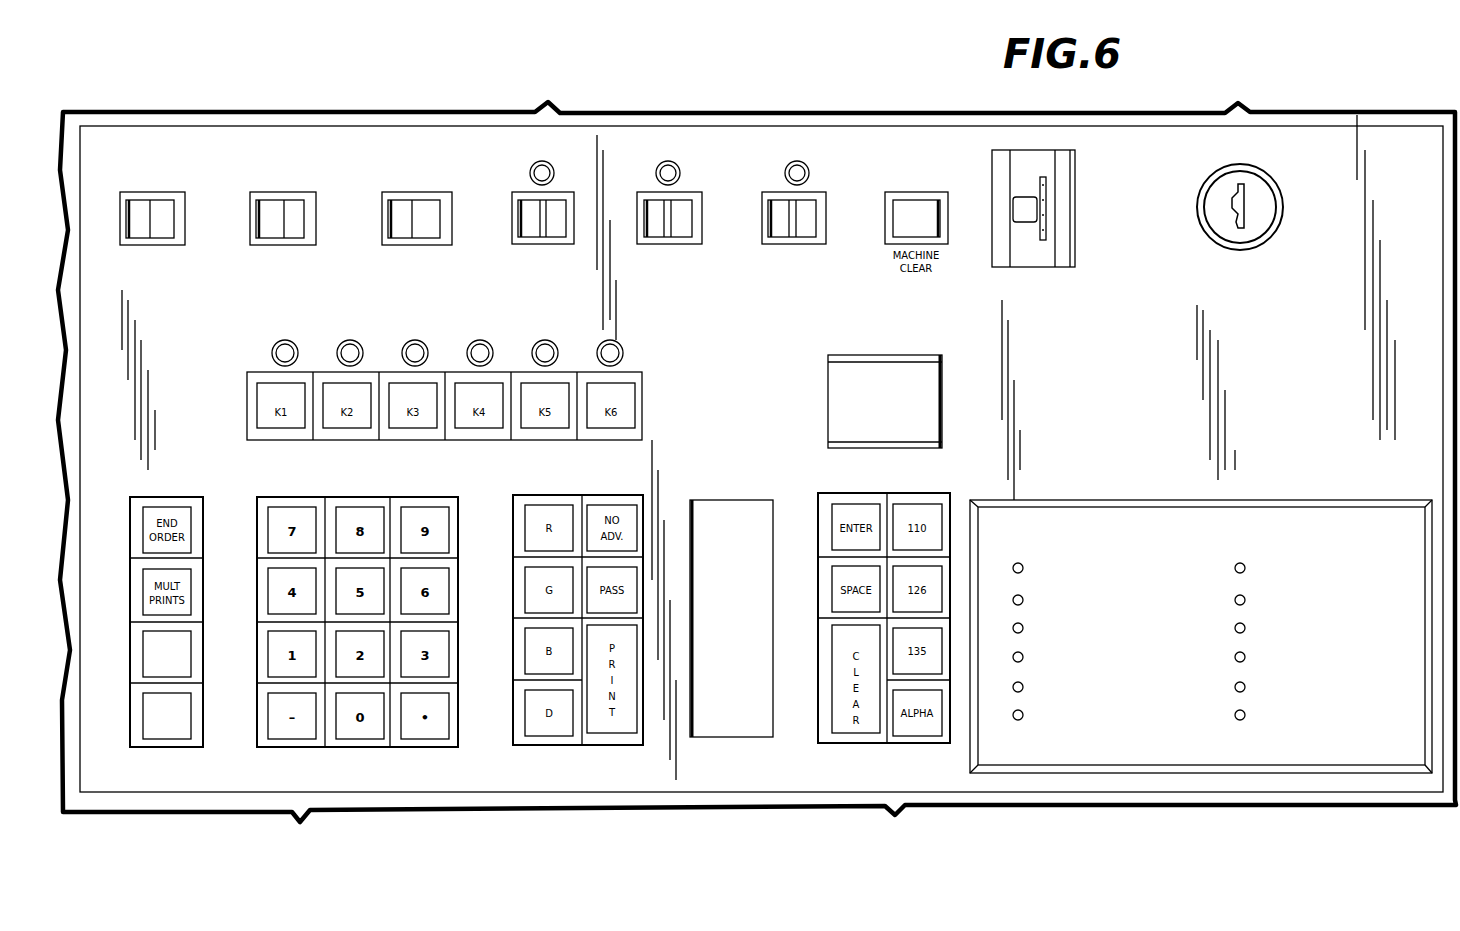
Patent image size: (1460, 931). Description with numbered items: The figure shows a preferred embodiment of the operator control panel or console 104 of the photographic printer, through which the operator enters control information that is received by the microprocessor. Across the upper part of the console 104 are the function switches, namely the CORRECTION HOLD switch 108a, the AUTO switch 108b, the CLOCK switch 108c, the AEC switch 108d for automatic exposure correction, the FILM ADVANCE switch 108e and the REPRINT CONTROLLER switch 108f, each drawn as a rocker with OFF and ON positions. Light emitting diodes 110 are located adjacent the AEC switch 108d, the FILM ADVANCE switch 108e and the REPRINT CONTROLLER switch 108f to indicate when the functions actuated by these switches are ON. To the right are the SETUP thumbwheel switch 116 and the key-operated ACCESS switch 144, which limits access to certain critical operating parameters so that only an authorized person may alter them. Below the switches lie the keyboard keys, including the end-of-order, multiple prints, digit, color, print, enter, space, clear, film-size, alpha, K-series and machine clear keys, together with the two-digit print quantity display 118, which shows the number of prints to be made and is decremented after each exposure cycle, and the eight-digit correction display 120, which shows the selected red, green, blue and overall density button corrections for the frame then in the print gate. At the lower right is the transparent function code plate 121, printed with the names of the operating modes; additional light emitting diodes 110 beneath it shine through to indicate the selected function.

The control panel or console 104 is at (535, 816).
The CORRECTION HOLD switch 108a is at (204, 176).
The AUTO switch 108b is at (292, 210).
The CLOCK switch 108c is at (420, 205).
The AEC switch 108d is at (527, 228).
The FILM ADVANCE switch 108e is at (654, 228).
The REPRINT CONTROLLER switch 108f is at (776, 228).
The light emitting diodes 110 is at (565, 155).
The SETUP thumbwheel switch 116 is at (1066, 214).
The two-digit print quantity display 118 is at (875, 372).
The eight-digit correction display 120 is at (734, 512).
The transparent function code plate 121 is at (1272, 510).
The access key switch 144 is at (1256, 195).